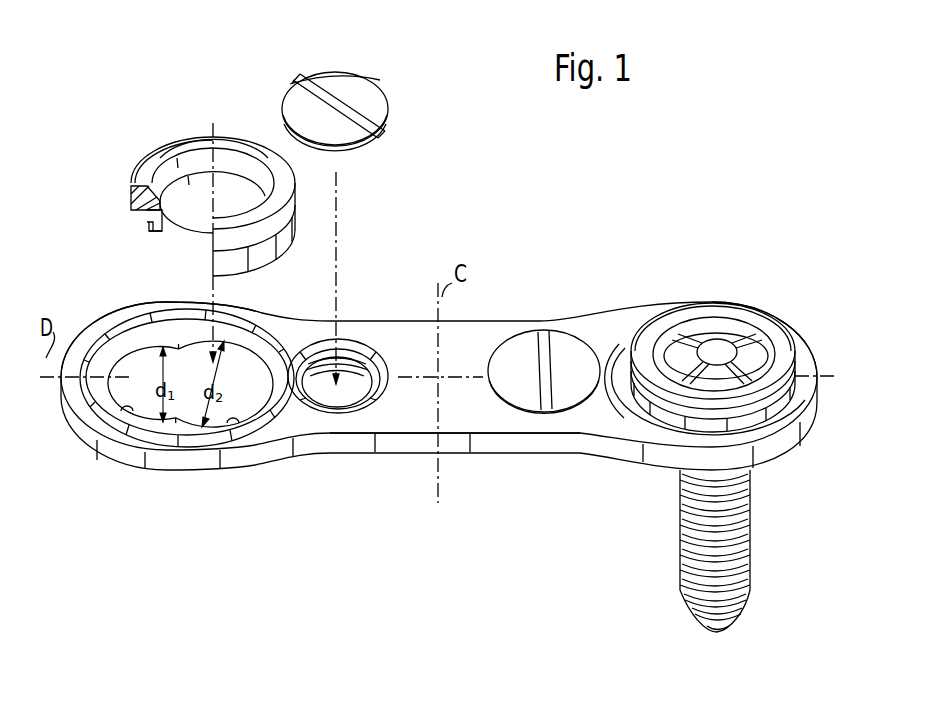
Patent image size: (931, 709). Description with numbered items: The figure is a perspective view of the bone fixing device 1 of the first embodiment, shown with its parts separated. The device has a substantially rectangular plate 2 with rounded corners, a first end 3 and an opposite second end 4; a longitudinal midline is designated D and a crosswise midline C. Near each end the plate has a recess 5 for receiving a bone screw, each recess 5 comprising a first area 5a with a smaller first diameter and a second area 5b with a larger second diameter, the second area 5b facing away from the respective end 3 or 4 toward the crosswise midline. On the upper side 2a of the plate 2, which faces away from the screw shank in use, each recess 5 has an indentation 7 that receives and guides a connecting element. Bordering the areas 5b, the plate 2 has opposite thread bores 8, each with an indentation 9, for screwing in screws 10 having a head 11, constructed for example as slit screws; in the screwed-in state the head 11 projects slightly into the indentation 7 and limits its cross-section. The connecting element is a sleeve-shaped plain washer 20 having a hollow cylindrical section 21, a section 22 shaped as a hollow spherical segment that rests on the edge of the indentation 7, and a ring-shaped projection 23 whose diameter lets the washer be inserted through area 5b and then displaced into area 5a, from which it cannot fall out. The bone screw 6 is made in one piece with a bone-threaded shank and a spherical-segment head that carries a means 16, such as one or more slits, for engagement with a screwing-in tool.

The bone fixing device 1 is at (499, 249).
The plate 2 is at (542, 437).
The upper side 2a is at (457, 409).
The first end 3 is at (58, 385).
The second end 4 is at (817, 373).
The recess 5 is at (186, 396).
The first area 5a is at (133, 413).
The second area 5b is at (238, 423).
The bone screw 6 is at (679, 547).
The indentation 7 is at (110, 357).
The thread bore 8 is at (348, 402).
The indentation 9 is at (353, 355).
The screw 10 is at (387, 91).
The head 11 is at (323, 80).
The means for engagement with a screwing-in tool 16 is at (742, 337).
The plain washer 20 is at (157, 147).
The hollow cylindrical section 21 is at (146, 221).
The hollow spherical segment section 22 is at (237, 167).
The ring-shaped projection 23 is at (147, 232).